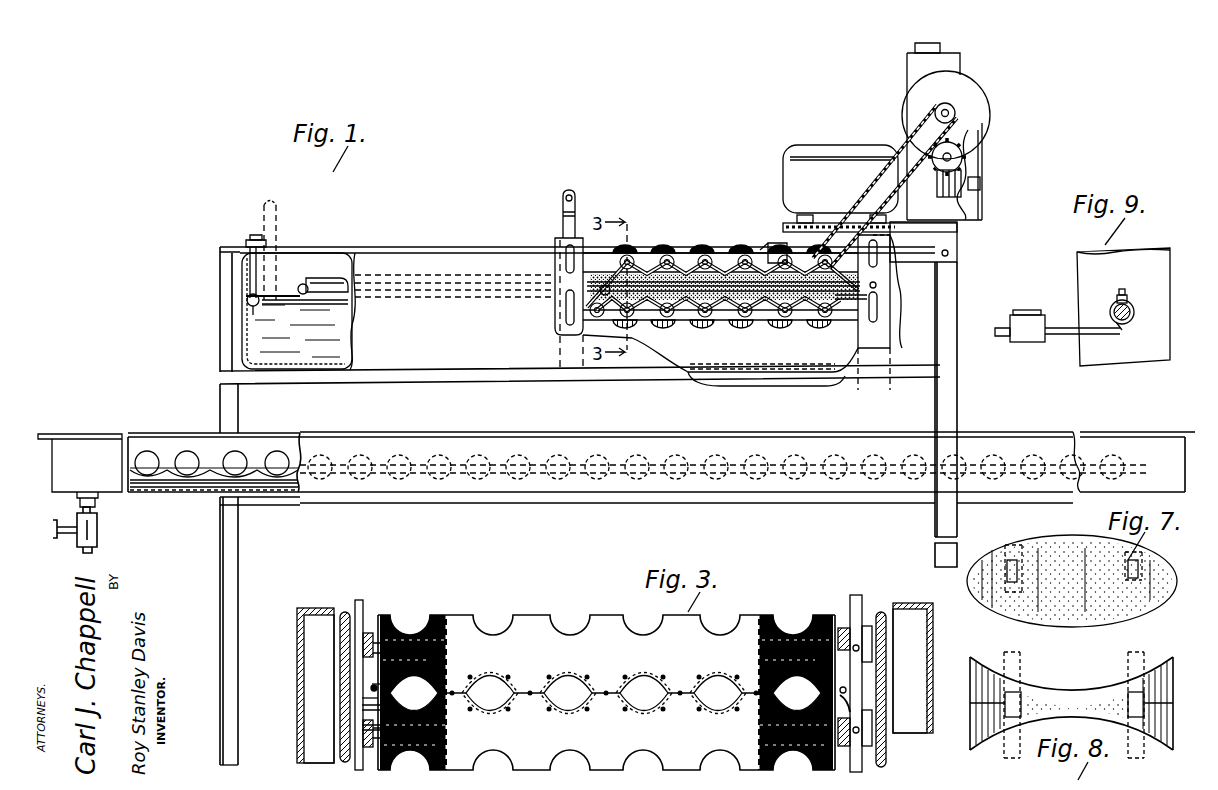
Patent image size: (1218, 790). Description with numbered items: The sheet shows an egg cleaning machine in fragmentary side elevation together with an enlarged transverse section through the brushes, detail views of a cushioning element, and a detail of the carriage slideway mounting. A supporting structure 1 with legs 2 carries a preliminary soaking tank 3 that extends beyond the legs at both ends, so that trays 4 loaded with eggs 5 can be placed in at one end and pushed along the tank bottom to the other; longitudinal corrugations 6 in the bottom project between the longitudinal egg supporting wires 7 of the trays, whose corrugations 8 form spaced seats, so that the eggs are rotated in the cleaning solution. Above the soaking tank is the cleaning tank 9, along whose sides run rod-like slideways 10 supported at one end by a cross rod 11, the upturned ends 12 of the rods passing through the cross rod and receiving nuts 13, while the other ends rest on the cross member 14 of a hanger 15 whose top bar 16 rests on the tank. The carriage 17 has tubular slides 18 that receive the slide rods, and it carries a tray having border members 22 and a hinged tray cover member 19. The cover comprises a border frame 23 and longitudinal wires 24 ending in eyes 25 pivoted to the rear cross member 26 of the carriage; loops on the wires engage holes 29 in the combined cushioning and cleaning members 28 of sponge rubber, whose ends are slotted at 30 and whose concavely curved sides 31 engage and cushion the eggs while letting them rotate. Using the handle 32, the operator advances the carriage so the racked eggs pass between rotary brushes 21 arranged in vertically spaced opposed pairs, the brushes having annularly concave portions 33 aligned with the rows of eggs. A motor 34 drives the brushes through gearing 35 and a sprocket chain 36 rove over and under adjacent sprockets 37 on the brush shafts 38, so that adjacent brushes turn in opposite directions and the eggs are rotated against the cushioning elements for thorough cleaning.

In FIG. 1, the supporting structure 1 is at (225, 330).
In FIG. 9, the supporting structure 1 is at (1079, 281).
In FIG. 3, the supporting structure 1 is at (300, 668).
In FIG. 1, the legs 2 is at (230, 592).
In FIG. 1, the preliminary soaking tank 3 is at (560, 492).
In FIG. 1, the trays 4 is at (172, 482).
In FIG. 1, the eggs 5 is at (186, 450).
In FIG. 1, the longitudinal corrugations 6 is at (203, 486).
In FIG. 3, the longitudinal egg supporting wires 7 is at (595, 714).
In FIG. 1, the corrugations 8 is at (214, 507).
In FIG. 1, the cleaning tank 9 is at (243, 344).
In FIG. 3, the cleaning tank 9 is at (345, 610).
In FIG. 1, the slideways 10 is at (243, 292).
In FIG. 9, the slideways 10 is at (1058, 335).
In FIG. 3, the slideways 10 is at (362, 704).
In FIG. 1, the cross rod 11 is at (876, 286).
In FIG. 9, the cross rod 11 is at (1134, 310).
In FIG. 9, the upturned ends 12 is at (1123, 330).
In FIG. 9, the nuts 13 is at (1128, 295).
In FIG. 1, the cross member 14 is at (246, 296).
In FIG. 1, the hanger 15 is at (260, 262).
In FIG. 1, the top bar 16 is at (247, 238).
In FIG. 1, the carriage 17 is at (278, 226).
In FIG. 9, the carriage 17 is at (1028, 322).
In FIG. 1, the tubular slides 18 is at (300, 302).
In FIG. 9, the tubular slides 18 is at (1022, 342).
In FIG. 3, the tubular slides 18 is at (370, 698).
In FIG. 1, the tray cover member 19 is at (336, 277).
In FIG. 3, the tray cover member 19 is at (370, 688).
In FIG. 8, the tray cover member 19 is at (1008, 656).
In FIG. 1, the rotary brushes 21 is at (715, 322).
In FIG. 3, the rotary brushes 21 is at (405, 630).
In FIG. 1, the border members 22 is at (828, 300).
In FIG. 3, the border members 22 is at (372, 688).
In FIG. 1, the border frame 23 is at (703, 296).
In FIG. 3, the border frame 23 is at (843, 690).
In FIG. 3, the longitudinal wires 24 is at (602, 660).
In FIG. 1, the eyes 25 is at (318, 280).
In FIG. 1, the rear cross member 26 is at (295, 279).
In FIG. 1, the combined cushioning and cleaning members 28 is at (762, 256).
In FIG. 7, the combined cushioning and cleaning members 28 is at (988, 600).
In FIG. 8, the combined cushioning and cleaning members 28 is at (995, 755).
In FIG. 7, the holes 29 is at (1008, 570).
In FIG. 8, the holes 29 is at (1018, 700).
In FIG. 8, the slots 30 is at (985, 710).
In FIG. 7, the concavely curved sides 31 is at (1058, 550).
In FIG. 8, the concavely curved sides 31 is at (1068, 718).
In FIG. 1, the handle 32 is at (575, 200).
In FIG. 3, the annularly concave portions 33 is at (485, 632).
In FIG. 1, the motor 34 is at (838, 158).
In FIG. 1, the gearing 35 is at (985, 136).
In FIG. 1, the sprocket chain 36 is at (905, 160).
In FIG. 1, the sprockets 37 is at (725, 256).
In FIG. 3, the sprockets 37 is at (858, 630).
In FIG. 1, the shafts 38 is at (630, 262).
In FIG. 3, the shafts 38 is at (375, 727).